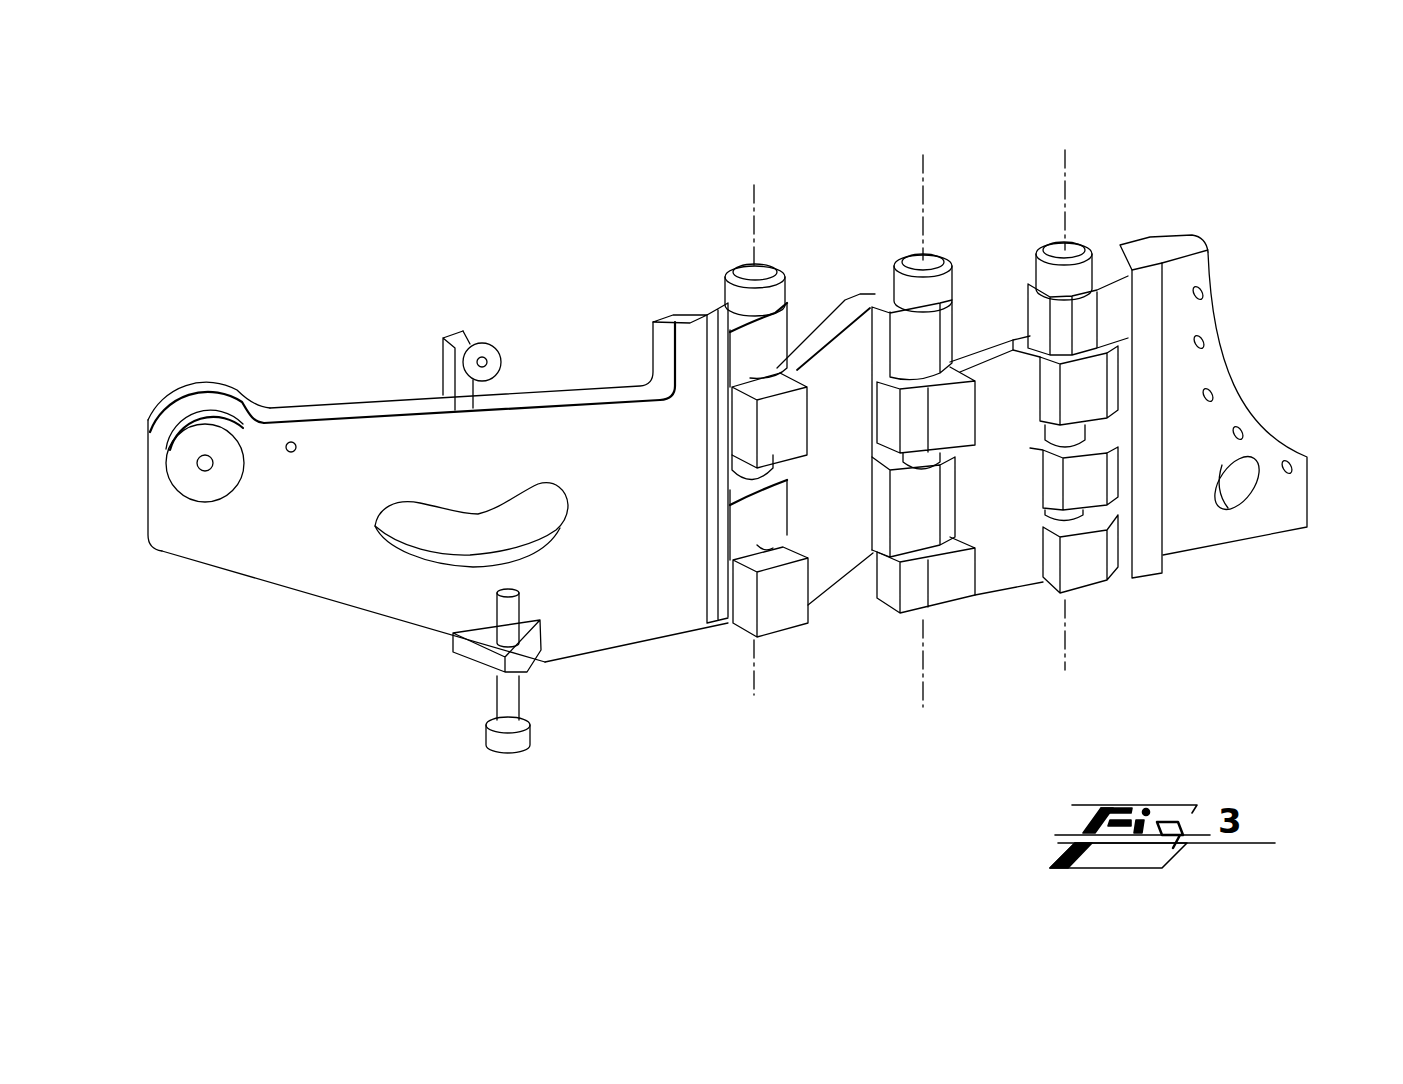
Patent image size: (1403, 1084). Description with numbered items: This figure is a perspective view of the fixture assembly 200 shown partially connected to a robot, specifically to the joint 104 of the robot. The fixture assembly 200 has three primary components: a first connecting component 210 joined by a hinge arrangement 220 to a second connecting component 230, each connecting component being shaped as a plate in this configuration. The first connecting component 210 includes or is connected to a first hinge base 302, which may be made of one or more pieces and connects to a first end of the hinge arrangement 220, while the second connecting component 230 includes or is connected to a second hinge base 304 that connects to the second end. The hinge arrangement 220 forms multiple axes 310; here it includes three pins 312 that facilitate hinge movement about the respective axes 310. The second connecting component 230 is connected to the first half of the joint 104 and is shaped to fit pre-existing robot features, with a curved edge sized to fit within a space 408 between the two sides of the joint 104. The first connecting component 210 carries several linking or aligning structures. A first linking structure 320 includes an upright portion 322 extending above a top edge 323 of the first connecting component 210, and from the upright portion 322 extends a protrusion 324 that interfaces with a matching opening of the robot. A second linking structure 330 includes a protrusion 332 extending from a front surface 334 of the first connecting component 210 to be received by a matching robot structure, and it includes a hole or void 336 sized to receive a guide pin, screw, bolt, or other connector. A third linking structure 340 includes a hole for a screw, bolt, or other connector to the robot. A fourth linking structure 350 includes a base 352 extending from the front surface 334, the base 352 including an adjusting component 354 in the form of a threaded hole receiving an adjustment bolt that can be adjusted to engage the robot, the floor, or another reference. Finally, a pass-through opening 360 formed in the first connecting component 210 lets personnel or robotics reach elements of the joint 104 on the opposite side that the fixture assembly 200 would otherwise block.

The joint 104 is at (1107, 245).
The fixture assembly 200 is at (791, 728).
The first connecting component 210 is at (236, 714).
The hinge arrangement 220 is at (842, 619).
The second connecting component 230 is at (1308, 412).
The first hinge base 302 is at (741, 352).
The second hinge base 304 is at (1024, 311).
The axes 310 is at (1197, 650).
The pins 312 is at (731, 266).
The first linking structure 320 is at (460, 413).
The upright portion 322 is at (420, 353).
The top edge 323 is at (567, 392).
The protrusion 324 is at (497, 328).
The second linking structure 330 is at (215, 521).
The protrusion 332 is at (236, 422).
The front surface 334 is at (662, 528).
The hole or void 336 is at (198, 458).
The third linking structure 340 is at (292, 441).
The fourth linking structure 350 is at (558, 652).
The base 352 is at (483, 633).
The adjusting component 354 is at (496, 700).
The opening 360 is at (402, 582).
The space 408 is at (1128, 228).